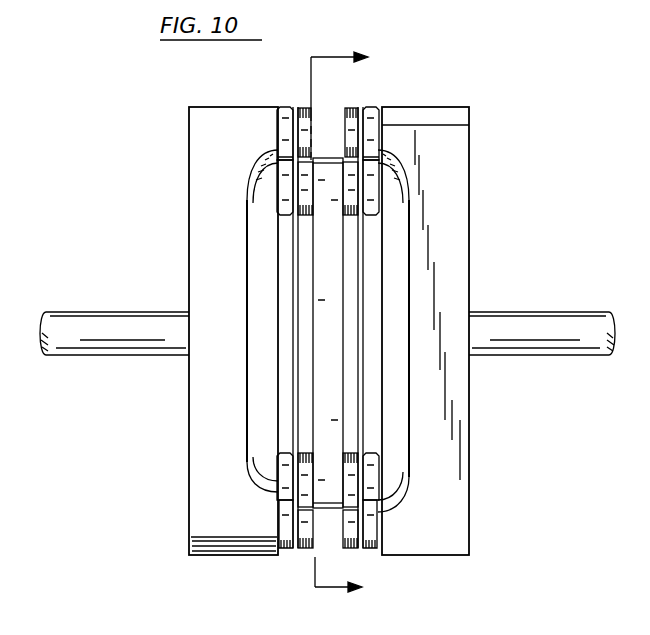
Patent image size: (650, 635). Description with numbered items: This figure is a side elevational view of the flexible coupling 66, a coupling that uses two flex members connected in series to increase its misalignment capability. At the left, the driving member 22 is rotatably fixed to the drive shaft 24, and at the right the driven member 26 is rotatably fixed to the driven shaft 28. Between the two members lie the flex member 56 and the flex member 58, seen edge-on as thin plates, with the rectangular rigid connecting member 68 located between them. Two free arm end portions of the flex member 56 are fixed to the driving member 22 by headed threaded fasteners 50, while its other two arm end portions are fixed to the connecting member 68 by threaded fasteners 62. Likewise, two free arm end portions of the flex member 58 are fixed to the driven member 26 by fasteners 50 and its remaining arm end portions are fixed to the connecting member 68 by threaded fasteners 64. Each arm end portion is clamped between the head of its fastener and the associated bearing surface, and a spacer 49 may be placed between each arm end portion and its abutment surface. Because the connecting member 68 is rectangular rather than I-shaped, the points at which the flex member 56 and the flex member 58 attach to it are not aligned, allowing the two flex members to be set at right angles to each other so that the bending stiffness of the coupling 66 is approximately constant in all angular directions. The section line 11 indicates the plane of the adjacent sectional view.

The section line 11- 11 is at (346, 324).
The driving member 22 is at (205, 438).
The drive shaft 24 is at (110, 313).
The driven member 26 is at (455, 498).
The driven shaft 28 is at (522, 313).
The spacer 49 is at (291, 107).
The headed threaded fastener 50 is at (300, 133).
The flex member 56 is at (293, 270).
The flex member 58 is at (363, 275).
The threaded fasteners 62 is at (280, 193).
The threaded fasteners 64 is at (382, 200).
The coupling 66 is at (483, 137).
The rectangular rigid connecting member 68 is at (337, 373).